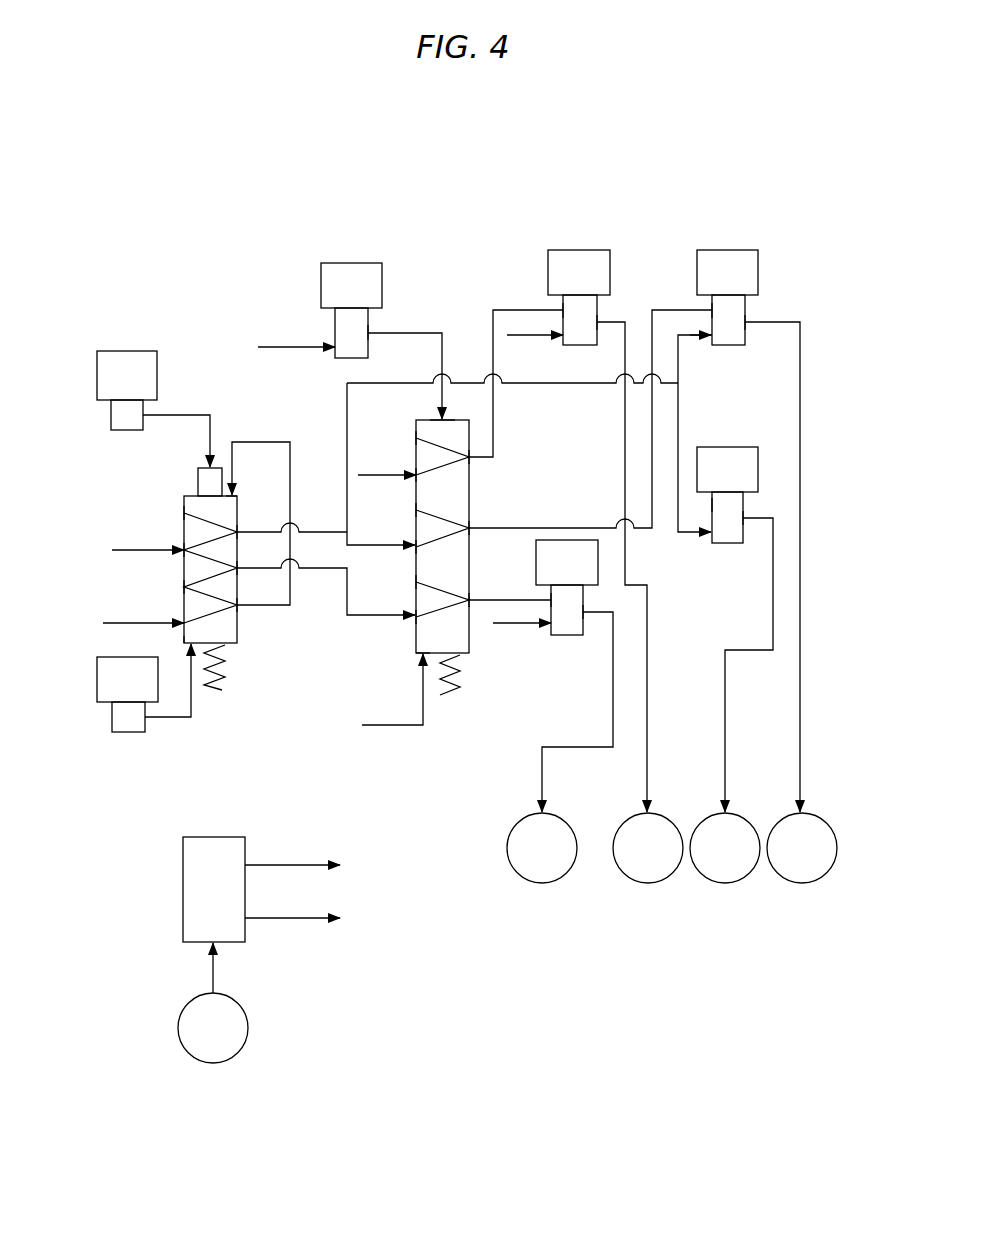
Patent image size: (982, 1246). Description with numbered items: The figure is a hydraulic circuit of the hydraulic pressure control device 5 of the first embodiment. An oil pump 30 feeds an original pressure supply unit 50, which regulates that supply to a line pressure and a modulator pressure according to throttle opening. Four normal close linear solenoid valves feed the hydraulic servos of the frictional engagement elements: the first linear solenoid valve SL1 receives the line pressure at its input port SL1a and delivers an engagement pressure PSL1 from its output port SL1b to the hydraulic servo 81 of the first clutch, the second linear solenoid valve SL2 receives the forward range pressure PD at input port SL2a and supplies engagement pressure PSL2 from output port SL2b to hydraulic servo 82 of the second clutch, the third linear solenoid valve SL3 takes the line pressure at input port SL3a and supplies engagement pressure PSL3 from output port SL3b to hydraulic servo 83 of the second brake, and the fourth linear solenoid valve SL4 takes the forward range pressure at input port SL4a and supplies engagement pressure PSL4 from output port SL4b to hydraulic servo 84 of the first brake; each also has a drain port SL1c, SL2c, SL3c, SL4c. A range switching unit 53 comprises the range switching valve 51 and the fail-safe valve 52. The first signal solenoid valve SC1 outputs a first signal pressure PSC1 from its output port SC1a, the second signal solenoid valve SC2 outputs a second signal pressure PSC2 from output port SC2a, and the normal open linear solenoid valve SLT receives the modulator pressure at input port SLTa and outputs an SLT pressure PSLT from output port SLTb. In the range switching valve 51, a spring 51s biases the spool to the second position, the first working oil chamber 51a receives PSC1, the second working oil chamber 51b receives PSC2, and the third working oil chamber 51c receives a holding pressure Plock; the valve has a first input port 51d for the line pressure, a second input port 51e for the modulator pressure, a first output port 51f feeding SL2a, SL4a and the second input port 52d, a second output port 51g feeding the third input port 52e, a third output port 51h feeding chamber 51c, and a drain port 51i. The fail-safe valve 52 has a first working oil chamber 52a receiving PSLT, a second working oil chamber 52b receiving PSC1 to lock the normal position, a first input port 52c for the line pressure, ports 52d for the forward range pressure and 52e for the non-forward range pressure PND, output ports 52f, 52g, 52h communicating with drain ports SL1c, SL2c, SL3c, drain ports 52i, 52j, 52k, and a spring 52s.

The hydraulic pressure control device 5 is at (402, 160).
The oil pump 30 is at (178, 1030).
The original pressure supply unit 50 is at (183, 895).
The range switching valve 51 is at (201, 604).
The first working oil chamber 51a is at (198, 465).
The second working oil chamber 51b is at (182, 653).
The third working oil chamber 51c is at (237, 497).
The first input port 51d is at (184, 552).
The second input port 51e is at (184, 588).
The first output port 51f is at (237, 532).
The second output port 51g is at (237, 569).
The third output port 51h is at (237, 606).
The drain port 51i is at (184, 508).
The spring 51s is at (225, 660).
The fail-safe valve 52 is at (423, 579).
The first working oil chamber 52a is at (437, 417).
The second working oil chamber 52b is at (420, 655).
The first input port 52c is at (416, 476).
The second input port 52d is at (416, 548).
The third input port 52e is at (416, 618).
The first output port 52f is at (469, 458).
The second output port 52g is at (469, 528).
The third output port 52h is at (469, 601).
The drain port 52i is at (416, 438).
The drain port 52j is at (416, 511).
The drain port 52k is at (416, 583).
The spring 52s is at (450, 688).
The range switching unit 53 is at (358, 768).
The hydraulic servo 81 is at (648, 883).
The hydraulic servo 82 is at (802, 883).
The hydraulic servo 83 is at (542, 883).
The hydraulic servo 84 is at (725, 883).
The first signal solenoid valve SC1 is at (159, 352).
The output port SC1a is at (152, 408).
The second signal solenoid valve SC2 is at (152, 733).
The output port SC2a is at (146, 728).
The linear solenoid valve SLT is at (347, 297).
The input port SLTa is at (333, 352).
The output port SLTb is at (368, 333).
The first linear solenoid valve SL1 is at (540, 309).
The input port SL1a is at (563, 345).
The output port SL1b is at (597, 322).
The drain port SL1c is at (563, 310).
The second linear solenoid valve SL2 is at (629, 347).
The input port SL2a is at (712, 346).
The output port SL2b is at (745, 322).
The drain port SL2c is at (712, 310).
The third linear solenoid valve SL3 is at (540, 573).
The input port SL3a is at (551, 632).
The output port SL3b is at (583, 612).
The drain port SL3c is at (551, 590).
The fourth linear solenoid valve SL4 is at (725, 495).
The input port SL4a is at (712, 534).
The output port SL4b is at (743, 518).
The drain port SL4c is at (712, 505).
The first signal pressure PSC1 is at (283, 557).
The second signal pressure PSC2 is at (177, 694).
The SLT pressure PSLT is at (407, 364).
The engagement pressure PSL1 is at (622, 554).
The engagement pressure PSL2 is at (772, 554).
The engagement pressure PSL3 is at (577, 712).
The engagement pressure PSL4 is at (743, 665).
The forward range pressure PD is at (326, 464).
The non-forward range pressure PND is at (326, 587).
The holding pressure Plock is at (261, 510).